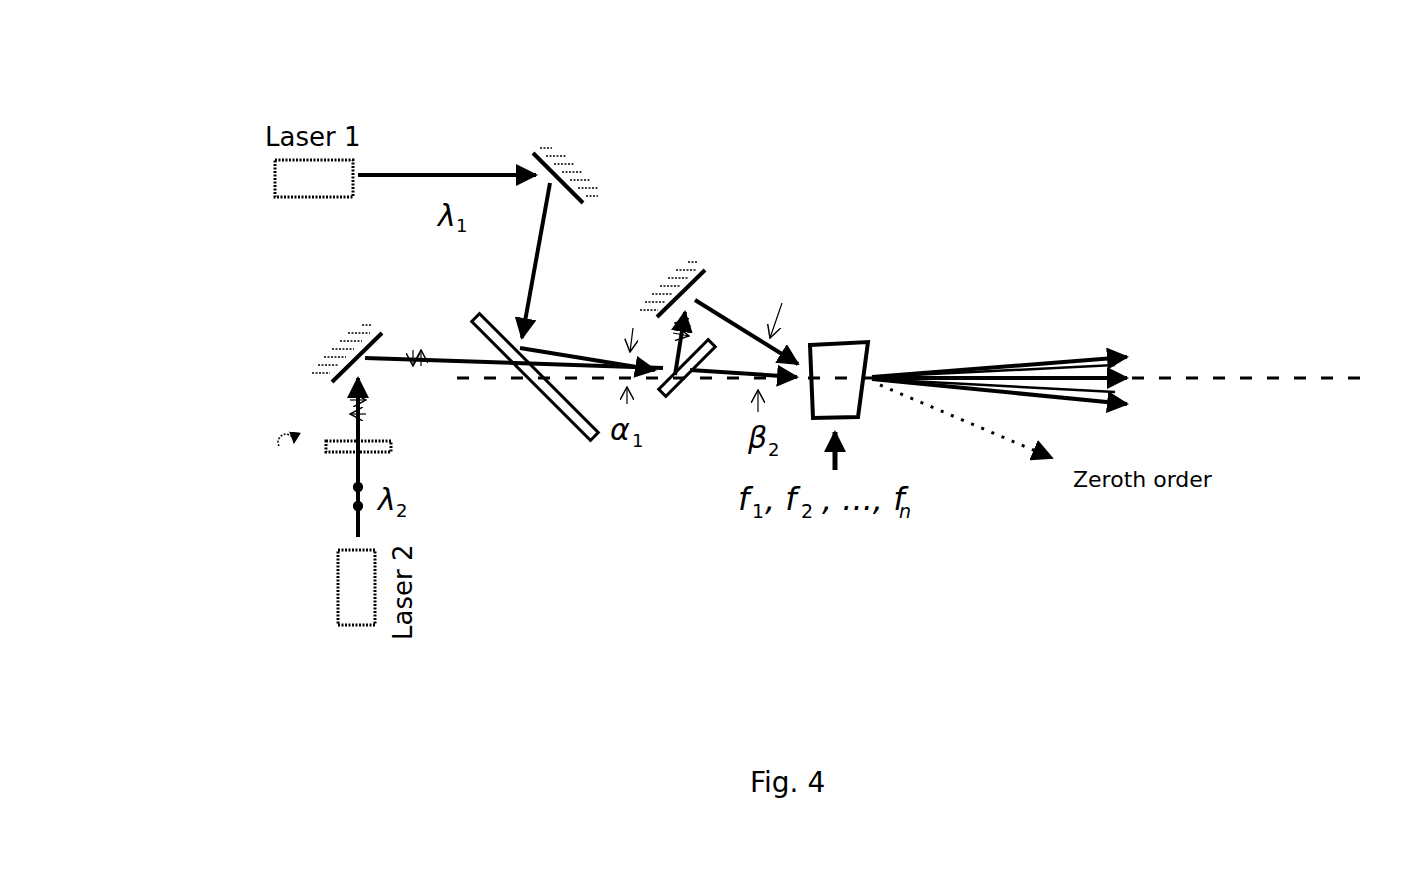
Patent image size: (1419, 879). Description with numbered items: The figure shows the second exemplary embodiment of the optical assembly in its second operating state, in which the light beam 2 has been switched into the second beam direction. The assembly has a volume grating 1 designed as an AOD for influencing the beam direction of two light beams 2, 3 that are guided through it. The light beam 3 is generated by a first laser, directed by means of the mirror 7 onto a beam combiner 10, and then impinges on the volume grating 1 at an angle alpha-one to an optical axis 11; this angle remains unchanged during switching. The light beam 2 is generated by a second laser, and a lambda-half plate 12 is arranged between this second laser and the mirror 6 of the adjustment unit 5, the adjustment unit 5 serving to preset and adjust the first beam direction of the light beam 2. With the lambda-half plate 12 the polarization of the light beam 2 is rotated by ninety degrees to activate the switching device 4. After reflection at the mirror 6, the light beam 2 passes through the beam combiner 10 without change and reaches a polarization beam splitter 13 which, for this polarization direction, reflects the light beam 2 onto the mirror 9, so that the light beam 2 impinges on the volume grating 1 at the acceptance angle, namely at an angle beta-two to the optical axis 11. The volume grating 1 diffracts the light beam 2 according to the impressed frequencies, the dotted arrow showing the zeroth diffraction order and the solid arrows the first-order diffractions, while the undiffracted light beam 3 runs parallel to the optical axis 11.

The volume grating 1 is at (870, 340).
The light beam 2 is at (458, 356).
The light beam 3 is at (418, 175).
The switching device 4 is at (748, 178).
The adjustment unit 5 is at (262, 392).
The mirror 6 is at (338, 368).
The mirror 7 is at (583, 187).
The mirror 9 is at (700, 277).
The beam combiner 10 is at (570, 420).
The optical axis 11 is at (1288, 378).
The λ/2 plate 12 is at (380, 452).
The polarization beam splitter 13 is at (675, 392).